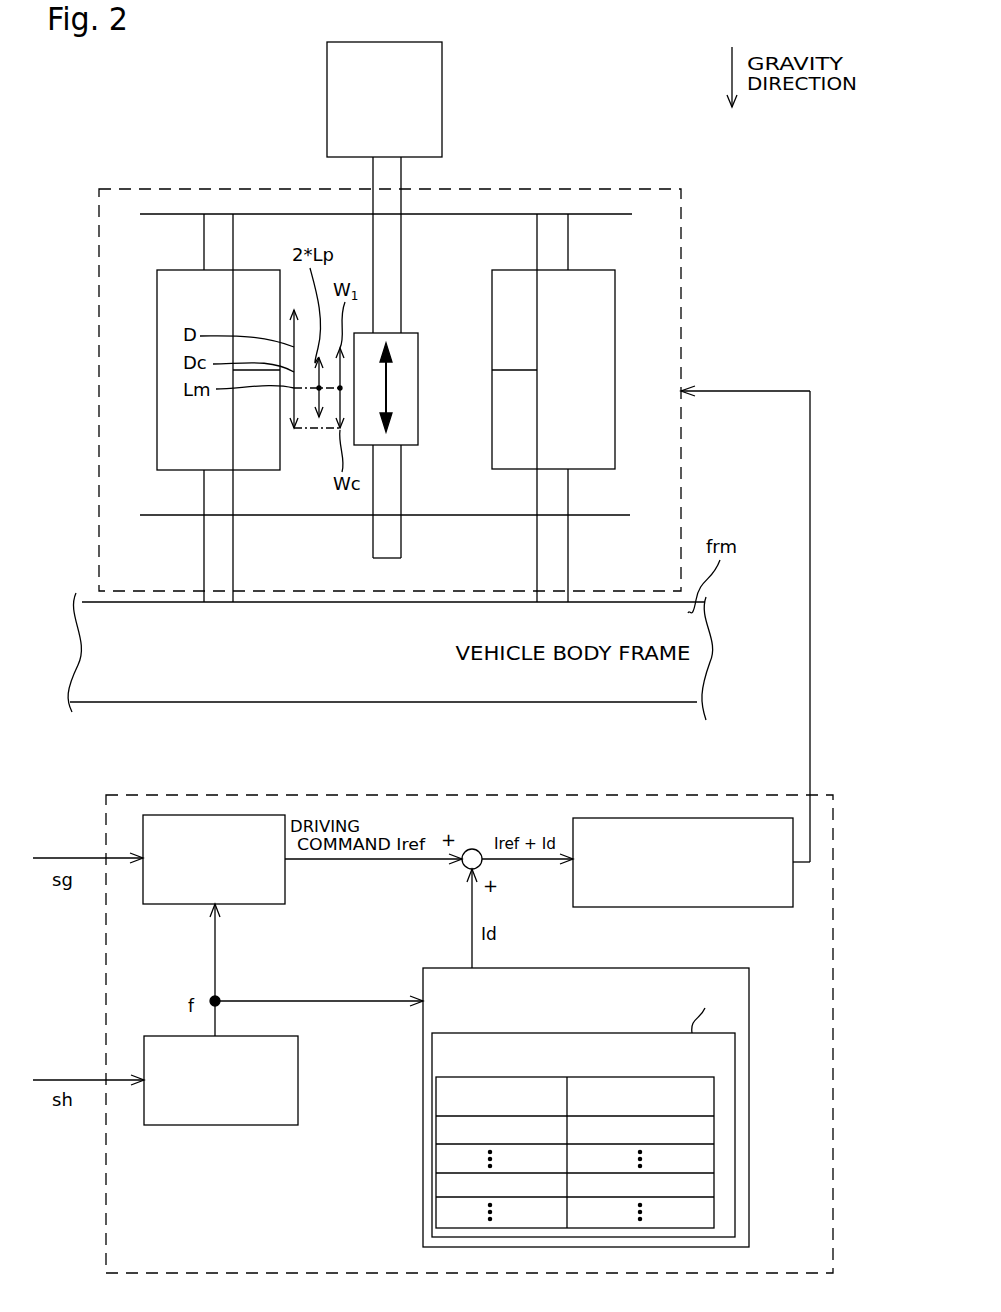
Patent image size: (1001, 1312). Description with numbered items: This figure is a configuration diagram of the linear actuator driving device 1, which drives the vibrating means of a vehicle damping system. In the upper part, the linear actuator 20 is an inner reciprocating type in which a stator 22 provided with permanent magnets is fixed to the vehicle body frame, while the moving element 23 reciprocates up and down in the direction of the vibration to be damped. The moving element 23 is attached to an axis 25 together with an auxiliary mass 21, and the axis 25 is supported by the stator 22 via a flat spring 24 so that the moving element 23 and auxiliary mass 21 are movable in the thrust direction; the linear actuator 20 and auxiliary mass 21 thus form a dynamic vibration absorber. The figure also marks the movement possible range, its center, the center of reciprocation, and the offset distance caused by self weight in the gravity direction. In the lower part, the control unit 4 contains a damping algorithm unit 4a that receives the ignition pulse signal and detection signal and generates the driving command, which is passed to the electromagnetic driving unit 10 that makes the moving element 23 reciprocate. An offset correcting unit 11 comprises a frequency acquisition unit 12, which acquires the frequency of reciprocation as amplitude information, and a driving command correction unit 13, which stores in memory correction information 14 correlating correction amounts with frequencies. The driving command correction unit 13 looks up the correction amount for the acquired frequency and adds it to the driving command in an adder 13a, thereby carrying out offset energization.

The linear actuator driving device 1 is at (836, 742).
The control unit 4 is at (122, 790).
The damping algorithm unit 4a is at (270, 904).
The electromagnetic driving unit 10 is at (760, 907).
The offset correcting unit 11 is at (300, 1210).
The frequency acquisition unit 12 is at (185, 1125).
The driving command correction unit 13 is at (423, 1148).
The adder 13a is at (462, 870).
The correction information 14 is at (714, 1095).
The linear actuator 20 is at (681, 218).
The auxiliary mass 21 is at (442, 93).
The stator 22 is at (165, 471).
The moving element 23 is at (418, 402).
The flat spring 24 is at (615, 215).
The axis 25 is at (387, 250).